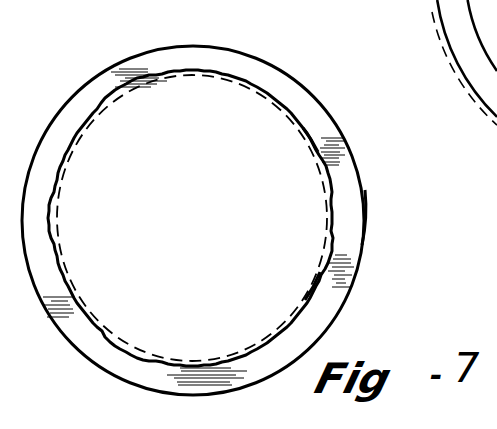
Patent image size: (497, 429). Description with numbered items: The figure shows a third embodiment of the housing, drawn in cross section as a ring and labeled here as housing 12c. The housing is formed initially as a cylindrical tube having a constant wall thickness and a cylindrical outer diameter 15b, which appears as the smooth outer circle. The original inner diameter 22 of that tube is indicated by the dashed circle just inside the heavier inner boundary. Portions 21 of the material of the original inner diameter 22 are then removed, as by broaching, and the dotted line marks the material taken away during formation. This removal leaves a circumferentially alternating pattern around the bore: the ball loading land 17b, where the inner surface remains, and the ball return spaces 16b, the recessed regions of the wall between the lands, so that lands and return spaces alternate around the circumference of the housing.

The outer wall of housing 12c is at (280, 80).
The cylindrical outer diameter 15b is at (364, 208).
The ball return spaces 16b is at (313, 300).
The ball loading land 17b is at (333, 226).
The portions of material removed 21 is at (304, 133).
The original inner diameter 22 is at (231, 84).